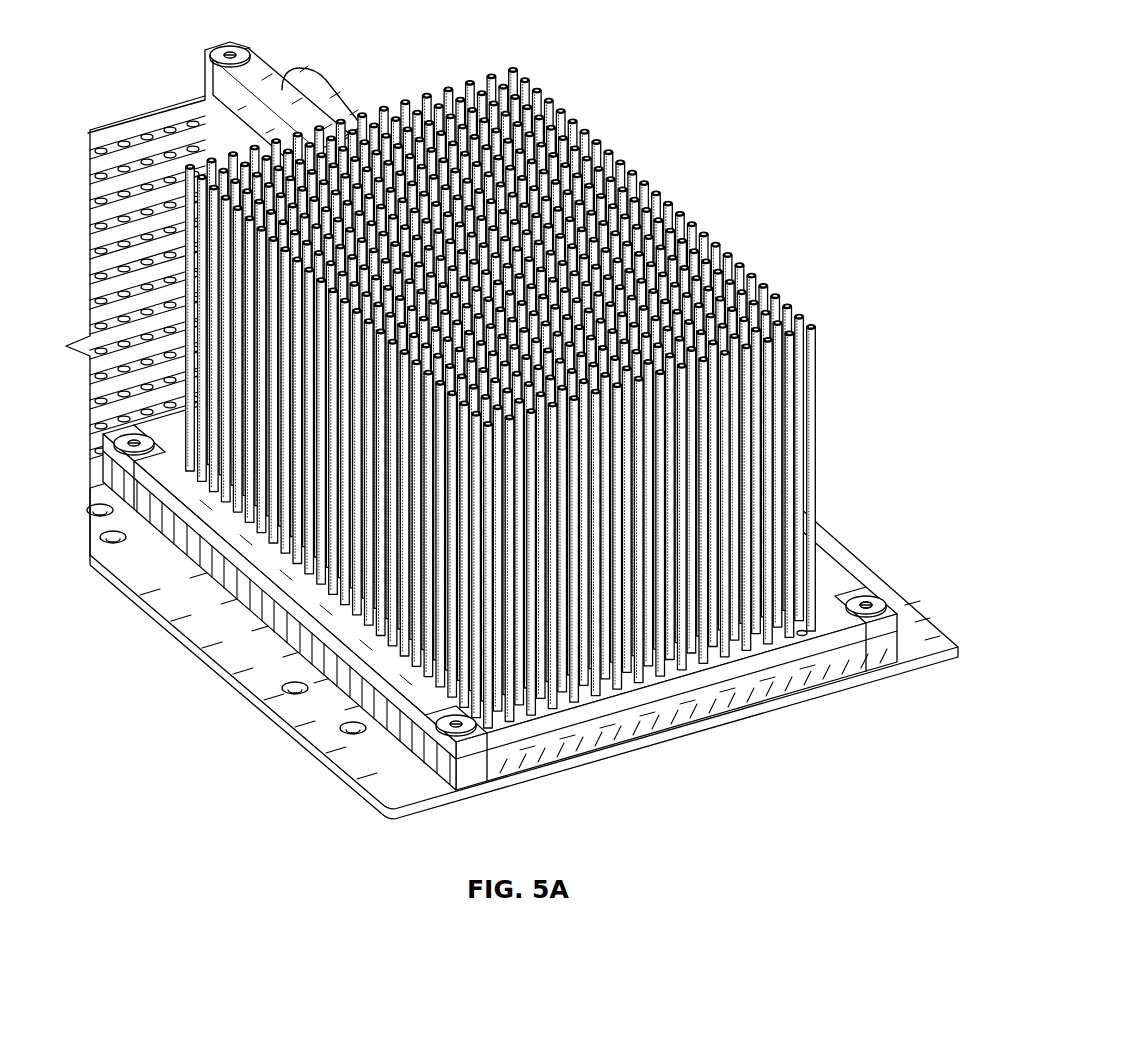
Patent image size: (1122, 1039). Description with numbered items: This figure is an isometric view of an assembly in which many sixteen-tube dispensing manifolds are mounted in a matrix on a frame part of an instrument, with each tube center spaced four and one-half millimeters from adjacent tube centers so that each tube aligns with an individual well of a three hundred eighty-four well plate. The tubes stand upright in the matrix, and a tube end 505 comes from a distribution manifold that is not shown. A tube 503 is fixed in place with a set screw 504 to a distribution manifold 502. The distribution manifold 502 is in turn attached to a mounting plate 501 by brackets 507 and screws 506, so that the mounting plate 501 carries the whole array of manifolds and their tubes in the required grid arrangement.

The mounting plate 501 is at (908, 630).
The distribution manifold 502 is at (810, 657).
The tube 503 is at (848, 598).
The set screw 504 is at (800, 633).
The tube end 505 is at (812, 327).
The screw 506 is at (868, 607).
The bracket 507 is at (883, 655).